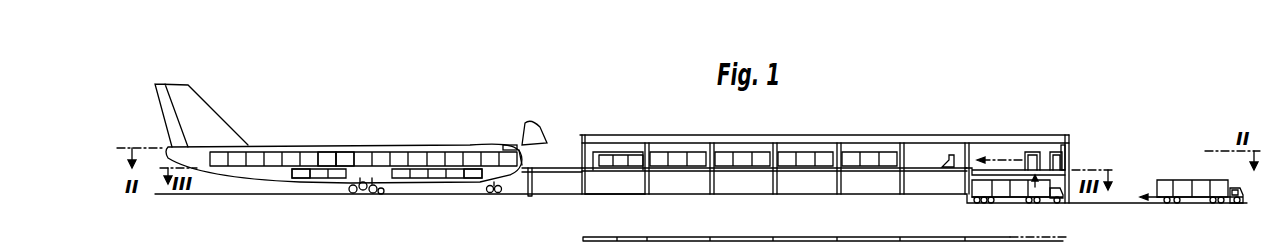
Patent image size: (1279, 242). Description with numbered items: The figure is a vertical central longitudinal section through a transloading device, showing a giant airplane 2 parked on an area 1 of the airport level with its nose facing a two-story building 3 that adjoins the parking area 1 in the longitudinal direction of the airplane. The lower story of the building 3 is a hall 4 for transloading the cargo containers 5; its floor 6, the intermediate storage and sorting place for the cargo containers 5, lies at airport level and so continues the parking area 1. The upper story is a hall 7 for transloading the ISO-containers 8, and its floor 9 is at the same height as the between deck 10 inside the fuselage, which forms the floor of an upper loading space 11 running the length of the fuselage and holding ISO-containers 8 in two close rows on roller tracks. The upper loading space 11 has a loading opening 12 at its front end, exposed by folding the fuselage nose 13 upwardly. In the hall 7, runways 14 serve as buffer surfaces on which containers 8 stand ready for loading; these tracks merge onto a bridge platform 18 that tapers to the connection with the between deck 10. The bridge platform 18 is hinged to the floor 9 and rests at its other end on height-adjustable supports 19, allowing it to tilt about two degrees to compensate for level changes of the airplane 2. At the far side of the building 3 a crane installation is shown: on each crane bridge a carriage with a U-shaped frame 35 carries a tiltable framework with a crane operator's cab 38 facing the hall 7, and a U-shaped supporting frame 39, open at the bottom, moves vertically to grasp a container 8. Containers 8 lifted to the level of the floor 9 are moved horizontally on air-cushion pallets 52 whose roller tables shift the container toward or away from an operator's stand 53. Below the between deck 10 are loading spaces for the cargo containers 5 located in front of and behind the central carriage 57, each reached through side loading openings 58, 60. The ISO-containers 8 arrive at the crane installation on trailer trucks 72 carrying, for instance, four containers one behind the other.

The airplane parking area 1 is at (234, 193).
The giant airplane 2 is at (155, 83).
The two-story building 3 is at (580, 133).
The hall 4 is at (589, 187).
The cargo containers 5 is at (322, 175).
The floor 6 is at (608, 192).
The hall 7 is at (611, 147).
The ISO-containers 8 is at (290, 157).
The floor 9 is at (694, 165).
The between deck 10 is at (351, 165).
The upper loading space 11 is at (333, 150).
The loading opening 12 is at (517, 155).
The fuselage nose 13 is at (528, 128).
The runways 14 is at (750, 165).
The bridge platform 18 is at (566, 168).
The supports 19 is at (530, 187).
The carriage frame 35 is at (1047, 166).
The crane operator's cab 38 is at (1066, 150).
The supporting frame 39 is at (1030, 151).
The pallets 52 is at (964, 145).
The operator's stand 53 is at (943, 162).
The central carriage 57 is at (381, 193).
The loading opening 58 is at (475, 178).
The loading opening 60 is at (292, 173).
The trailer trucks 72 is at (1228, 187).